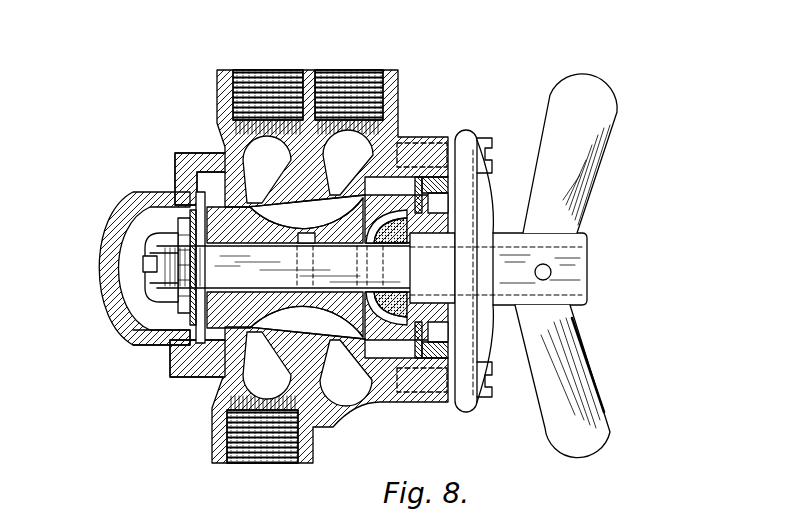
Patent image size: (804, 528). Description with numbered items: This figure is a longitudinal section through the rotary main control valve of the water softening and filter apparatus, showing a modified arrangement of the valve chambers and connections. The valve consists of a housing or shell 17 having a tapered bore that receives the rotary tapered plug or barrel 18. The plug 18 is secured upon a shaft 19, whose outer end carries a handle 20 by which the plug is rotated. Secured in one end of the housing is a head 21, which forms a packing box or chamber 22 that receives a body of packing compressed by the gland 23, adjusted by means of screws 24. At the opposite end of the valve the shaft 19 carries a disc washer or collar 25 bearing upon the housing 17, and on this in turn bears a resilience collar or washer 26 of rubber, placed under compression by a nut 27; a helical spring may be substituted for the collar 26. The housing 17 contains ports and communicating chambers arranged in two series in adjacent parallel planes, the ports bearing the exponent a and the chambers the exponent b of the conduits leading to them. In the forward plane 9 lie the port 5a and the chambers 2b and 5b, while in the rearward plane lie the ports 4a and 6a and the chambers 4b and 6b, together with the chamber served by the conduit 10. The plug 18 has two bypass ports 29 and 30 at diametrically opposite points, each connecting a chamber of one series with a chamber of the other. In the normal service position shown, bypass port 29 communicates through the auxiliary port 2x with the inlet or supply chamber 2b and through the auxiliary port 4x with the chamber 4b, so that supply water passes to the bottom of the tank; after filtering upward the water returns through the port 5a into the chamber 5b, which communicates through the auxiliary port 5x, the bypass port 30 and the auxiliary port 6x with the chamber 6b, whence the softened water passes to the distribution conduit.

The conduit 10 is at (255, 492).
The forward plane 9 is at (343, 478).
The port 6a is at (257, 93).
The port 5a is at (360, 85).
The port 4a is at (265, 465).
The valve chamber 6b is at (267, 169).
The valve chamber 5b is at (385, 140).
The valve chamber 4b is at (267, 365).
The inlet or supply chamber 2b is at (346, 373).
The auxiliary port 6x is at (276, 195).
The auxiliary port 5x is at (335, 191).
The auxiliary port 4x is at (276, 334).
The auxiliary port 2x is at (335, 343).
The bypass port 30 is at (306, 213).
The bypass port 29 is at (306, 321).
The rotary tapered plug or barrel 18 is at (190, 207).
The housing or shell 17 is at (213, 398).
The resilience collar or washer 26 is at (178, 245).
The disc washer or collar 25 is at (150, 337).
The nut 27 is at (150, 268).
The shaft 19 is at (184, 282).
The packing box or chamber 22 is at (408, 302).
The gland 23 is at (433, 242).
The screws 24 is at (481, 142).
The head 21 is at (480, 197).
The handle 20 is at (570, 160).